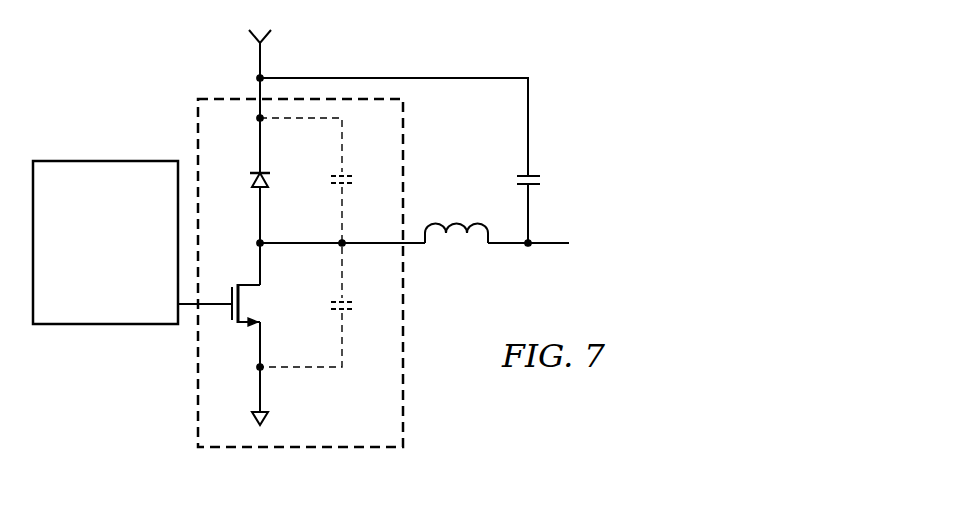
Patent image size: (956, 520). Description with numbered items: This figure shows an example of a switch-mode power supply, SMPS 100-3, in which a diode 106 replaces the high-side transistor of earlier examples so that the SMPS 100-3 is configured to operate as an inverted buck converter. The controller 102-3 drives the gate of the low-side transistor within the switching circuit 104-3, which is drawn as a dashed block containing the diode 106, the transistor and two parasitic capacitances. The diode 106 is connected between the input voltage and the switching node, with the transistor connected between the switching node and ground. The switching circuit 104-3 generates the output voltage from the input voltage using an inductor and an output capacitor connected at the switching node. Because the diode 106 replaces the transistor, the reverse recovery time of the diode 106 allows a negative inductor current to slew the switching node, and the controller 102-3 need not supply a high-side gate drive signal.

The SMPS 100-3 is at (613, 119).
The controller 102-3 is at (135, 273).
The switching circuit 104-3 is at (406, 137).
The diode 106 is at (252, 173).